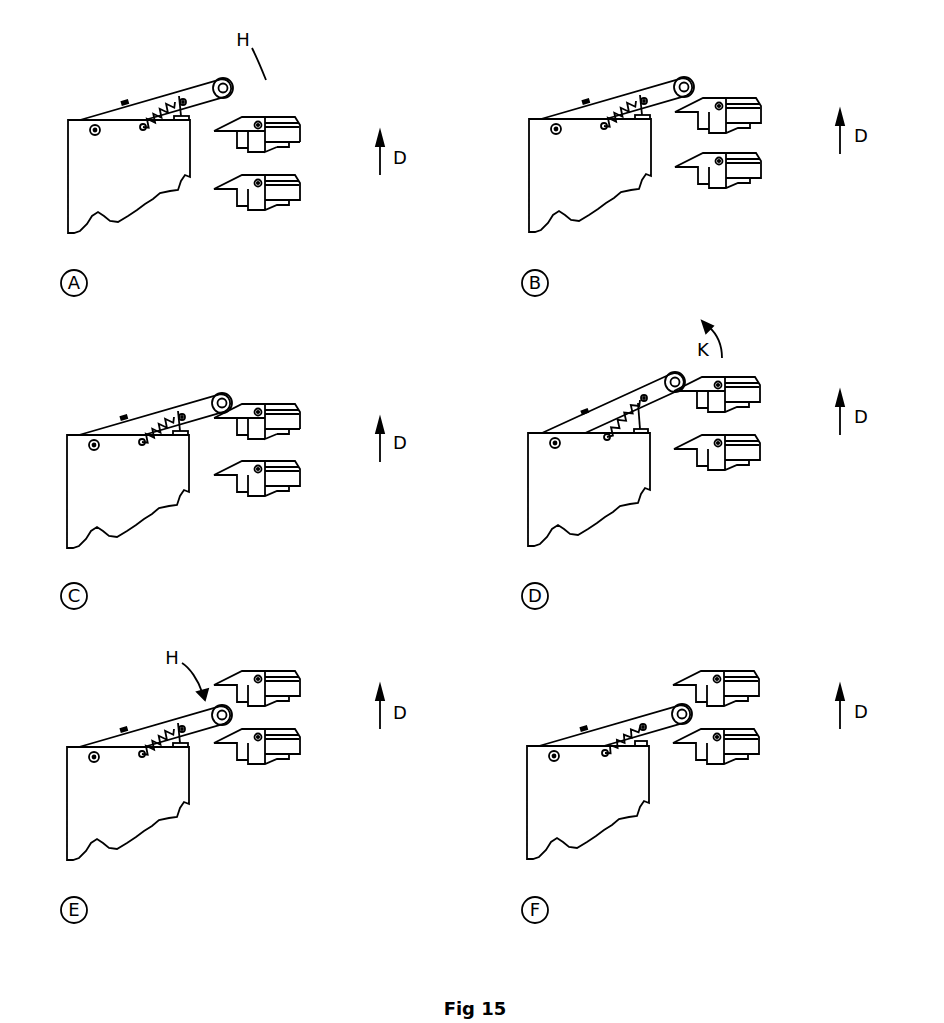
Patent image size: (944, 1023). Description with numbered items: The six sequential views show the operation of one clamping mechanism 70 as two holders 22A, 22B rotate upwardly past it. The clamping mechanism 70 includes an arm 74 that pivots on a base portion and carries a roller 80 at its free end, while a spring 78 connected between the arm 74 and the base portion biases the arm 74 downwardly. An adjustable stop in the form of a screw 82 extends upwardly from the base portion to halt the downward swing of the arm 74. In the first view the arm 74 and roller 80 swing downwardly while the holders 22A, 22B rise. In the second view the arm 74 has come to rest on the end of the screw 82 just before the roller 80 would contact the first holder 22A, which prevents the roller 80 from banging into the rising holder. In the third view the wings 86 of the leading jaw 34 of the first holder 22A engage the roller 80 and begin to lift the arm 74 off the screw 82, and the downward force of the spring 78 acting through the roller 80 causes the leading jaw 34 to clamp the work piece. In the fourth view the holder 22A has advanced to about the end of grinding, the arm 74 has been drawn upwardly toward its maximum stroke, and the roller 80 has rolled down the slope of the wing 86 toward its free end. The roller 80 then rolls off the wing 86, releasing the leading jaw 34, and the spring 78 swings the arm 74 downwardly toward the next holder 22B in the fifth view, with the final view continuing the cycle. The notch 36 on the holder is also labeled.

In FIG. 15A, the clamping mechanism 70 is at (125, 139).
In FIG. 15C, the clamping mechanism 70 is at (125, 455).
In FIG. 15A, the arm 74 is at (110, 110).
In FIG. 15C, the arm 74 is at (110, 425).
In FIG. 15C, the spring 78 is at (155, 420).
In FIG. 15A, the roller 80 is at (228, 80).
In FIG. 15C, the roller 80 is at (228, 395).
In FIG. 15D, the roller 80 is at (672, 373).
In FIG. 15A, the screw 82 is at (178, 95).
In FIG. 15B, the screw 82 is at (640, 94).
In FIG. 15C, the screw 82 is at (178, 410).
In FIG. 15D, the screw 82 is at (636, 428).
In FIG. 15E, the screw 82 is at (178, 722).
In FIG. 15A, the wing portion 86 is at (237, 118).
In FIG. 15C, the wing portion 86 is at (240, 405).
In FIG. 15D, the wing portion 86 is at (706, 380).
In FIG. 15A, the leading jaw 34 is at (298, 120).
In FIG. 15C, the leading jaw 34 is at (298, 407).
In FIG. 15A, the notch 36 is at (288, 147).
In FIG. 15A, the first holder 22A is at (300, 117).
In FIG. 15B, the first holder 22A is at (745, 118).
In FIG. 15C, the first holder 22A is at (300, 393).
In FIG. 15D, the first holder 22A is at (760, 368).
In FIG. 15E, the first holder 22A is at (283, 694).
In FIG. 15F, the first holder 22A is at (745, 692).
In FIG. 15A, the second holder 22B is at (283, 195).
In FIG. 15B, the second holder 22B is at (745, 174).
In FIG. 15C, the second holder 22B is at (283, 481).
In FIG. 15D, the second holder 22B is at (745, 456).
In FIG. 15E, the second holder 22B is at (283, 749).
In FIG. 15F, the second holder 22B is at (745, 748).